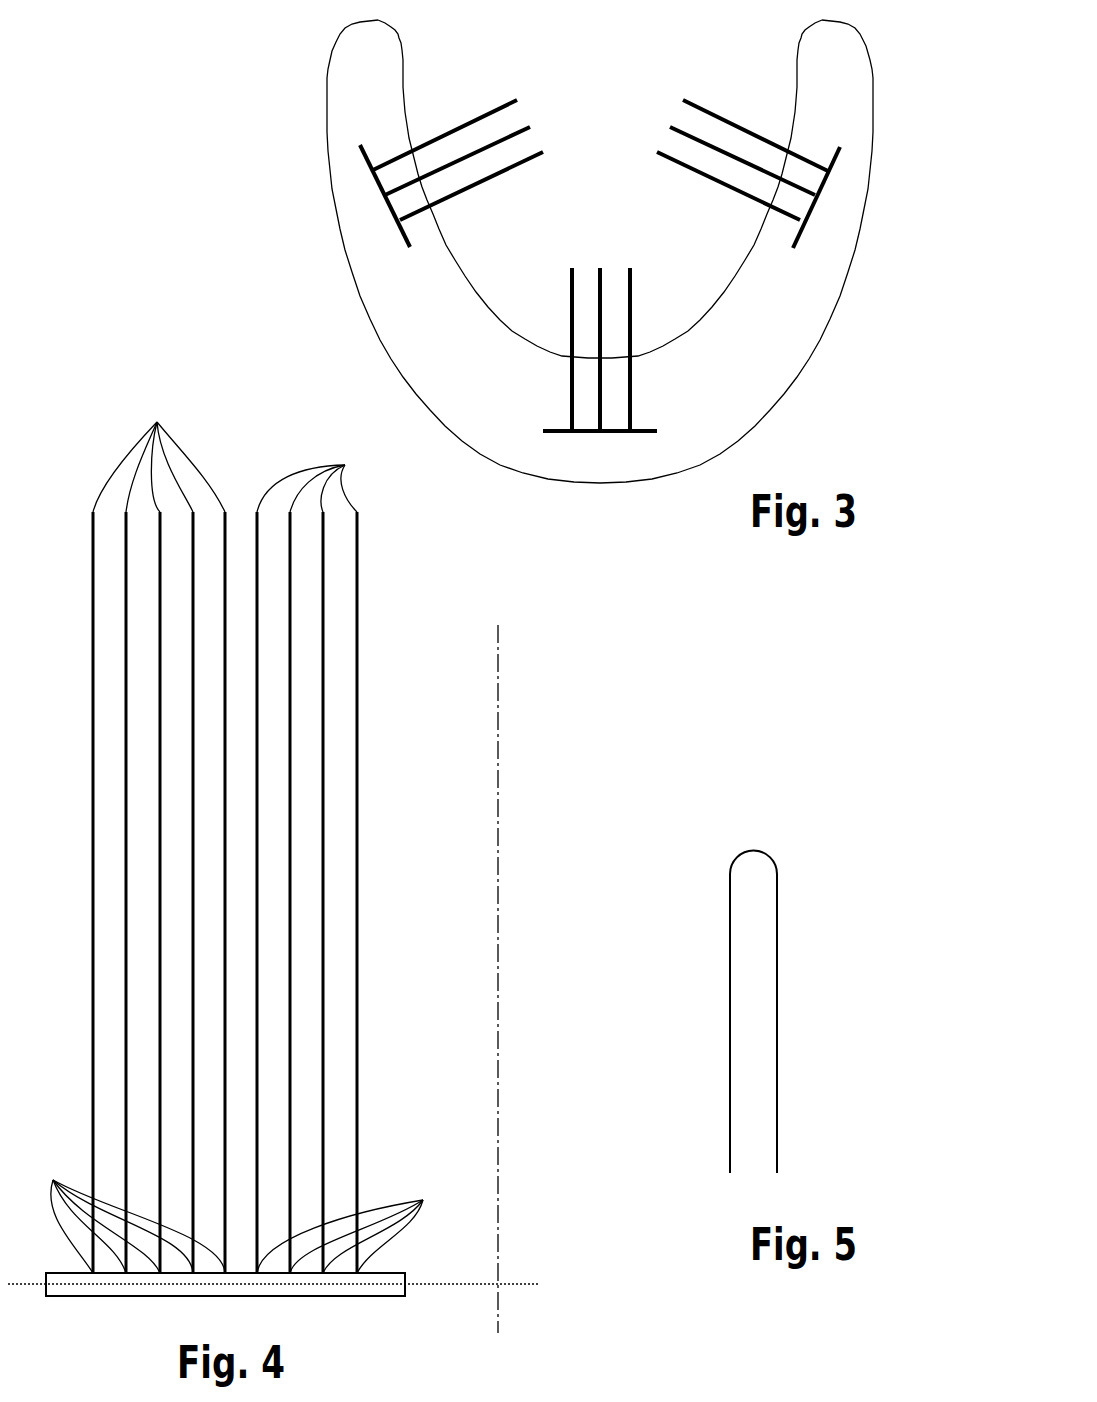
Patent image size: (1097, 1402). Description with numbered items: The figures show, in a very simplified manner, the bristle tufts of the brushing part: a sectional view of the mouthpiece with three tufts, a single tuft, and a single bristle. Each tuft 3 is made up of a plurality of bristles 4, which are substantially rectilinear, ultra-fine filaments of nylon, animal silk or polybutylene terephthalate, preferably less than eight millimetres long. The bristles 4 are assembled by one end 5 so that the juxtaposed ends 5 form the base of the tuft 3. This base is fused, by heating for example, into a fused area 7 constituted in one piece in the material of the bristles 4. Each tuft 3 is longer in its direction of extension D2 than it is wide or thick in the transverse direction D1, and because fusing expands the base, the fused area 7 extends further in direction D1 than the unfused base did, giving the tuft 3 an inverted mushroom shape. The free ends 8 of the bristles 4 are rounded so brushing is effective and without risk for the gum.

In FIG. 3, the tuft 3 is at (586, 273).
In FIG. 4, the tuft 3 is at (227, 879).
In FIG. 3, the bristles 4 is at (473, 120).
In FIG. 4, the bristles 4 is at (193, 1020).
In FIG. 5, the bristles 4 is at (753, 1100).
In FIG. 4, the end 5 is at (237, 1212).
In FIG. 5, the end 5 is at (753, 1167).
In FIG. 3, the fused area 7 is at (378, 186).
In FIG. 4, the fused area 7 is at (342, 1296).
In FIG. 4, the free ends 8 is at (225, 452).
In FIG. 5, the free ends 8 is at (758, 861).
In FIG. 4, the direction D1 is at (522, 1285).
In FIG. 4, the direction of extension D2 is at (498, 1313).